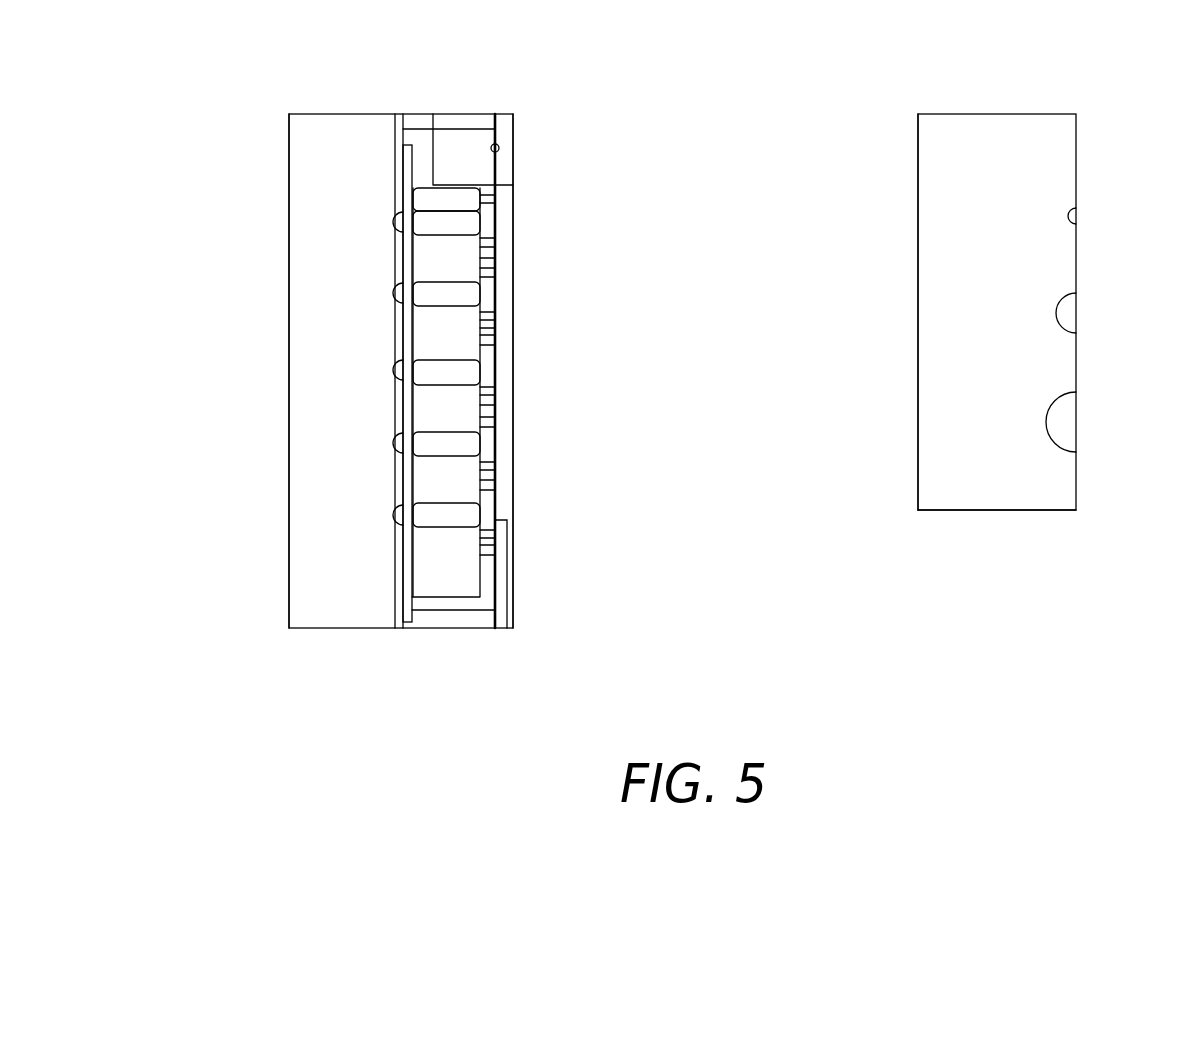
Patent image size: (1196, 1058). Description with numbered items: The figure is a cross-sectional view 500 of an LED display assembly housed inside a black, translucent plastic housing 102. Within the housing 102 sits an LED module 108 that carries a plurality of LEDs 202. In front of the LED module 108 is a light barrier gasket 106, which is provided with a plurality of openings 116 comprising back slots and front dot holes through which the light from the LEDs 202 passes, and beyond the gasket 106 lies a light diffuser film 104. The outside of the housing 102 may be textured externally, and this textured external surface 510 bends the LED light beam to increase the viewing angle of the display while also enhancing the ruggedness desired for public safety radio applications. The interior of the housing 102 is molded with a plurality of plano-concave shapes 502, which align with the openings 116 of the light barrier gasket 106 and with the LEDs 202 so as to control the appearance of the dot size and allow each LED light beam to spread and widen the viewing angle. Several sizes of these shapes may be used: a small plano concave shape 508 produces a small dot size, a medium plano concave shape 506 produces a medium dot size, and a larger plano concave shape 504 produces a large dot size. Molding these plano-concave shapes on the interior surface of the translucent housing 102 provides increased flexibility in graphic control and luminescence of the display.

The translucent housing 102 is at (361, 113).
The light diffuser film 104 is at (406, 616).
The light barrier gasket 106 is at (455, 575).
The LED module 108 is at (514, 307).
The openings 116 is at (460, 445).
The LEDs 202 is at (488, 215).
The cross-sectional view 500 is at (1178, 697).
The concave shapes 502 is at (393, 443).
The larger plano concave shape 504 is at (1077, 422).
The medium plano concave shape 506 is at (1077, 313).
The plano concave shape 508 is at (1078, 216).
The textured external surface 510 is at (289, 277).